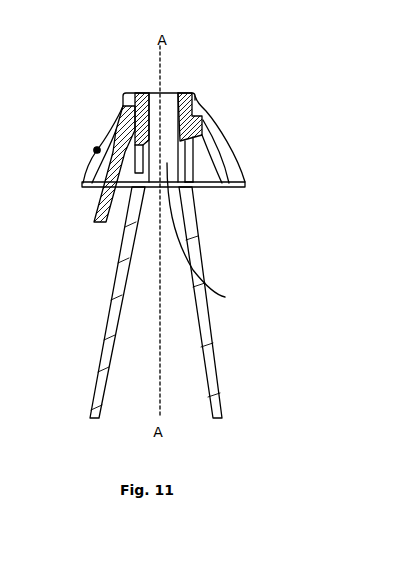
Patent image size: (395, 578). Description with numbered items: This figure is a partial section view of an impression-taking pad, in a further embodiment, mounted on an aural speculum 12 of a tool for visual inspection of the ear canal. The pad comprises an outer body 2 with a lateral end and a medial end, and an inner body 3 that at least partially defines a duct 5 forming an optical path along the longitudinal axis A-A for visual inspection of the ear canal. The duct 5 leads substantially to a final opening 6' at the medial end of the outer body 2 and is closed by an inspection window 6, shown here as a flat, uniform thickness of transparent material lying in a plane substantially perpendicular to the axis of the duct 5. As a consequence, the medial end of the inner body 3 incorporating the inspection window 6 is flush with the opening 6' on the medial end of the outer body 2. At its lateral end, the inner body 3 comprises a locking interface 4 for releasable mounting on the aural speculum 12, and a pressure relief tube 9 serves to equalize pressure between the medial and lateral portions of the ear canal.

The outer body 2 is at (94, 150).
The inner body 3 is at (185, 114).
The locking interface 4 is at (190, 188).
The duct 5 is at (201, 234).
The inspection window 6 is at (186, 99).
The final opening 6' is at (141, 104).
The pressure relief tube 9 is at (92, 211).
The aural speculum 12 is at (220, 363).